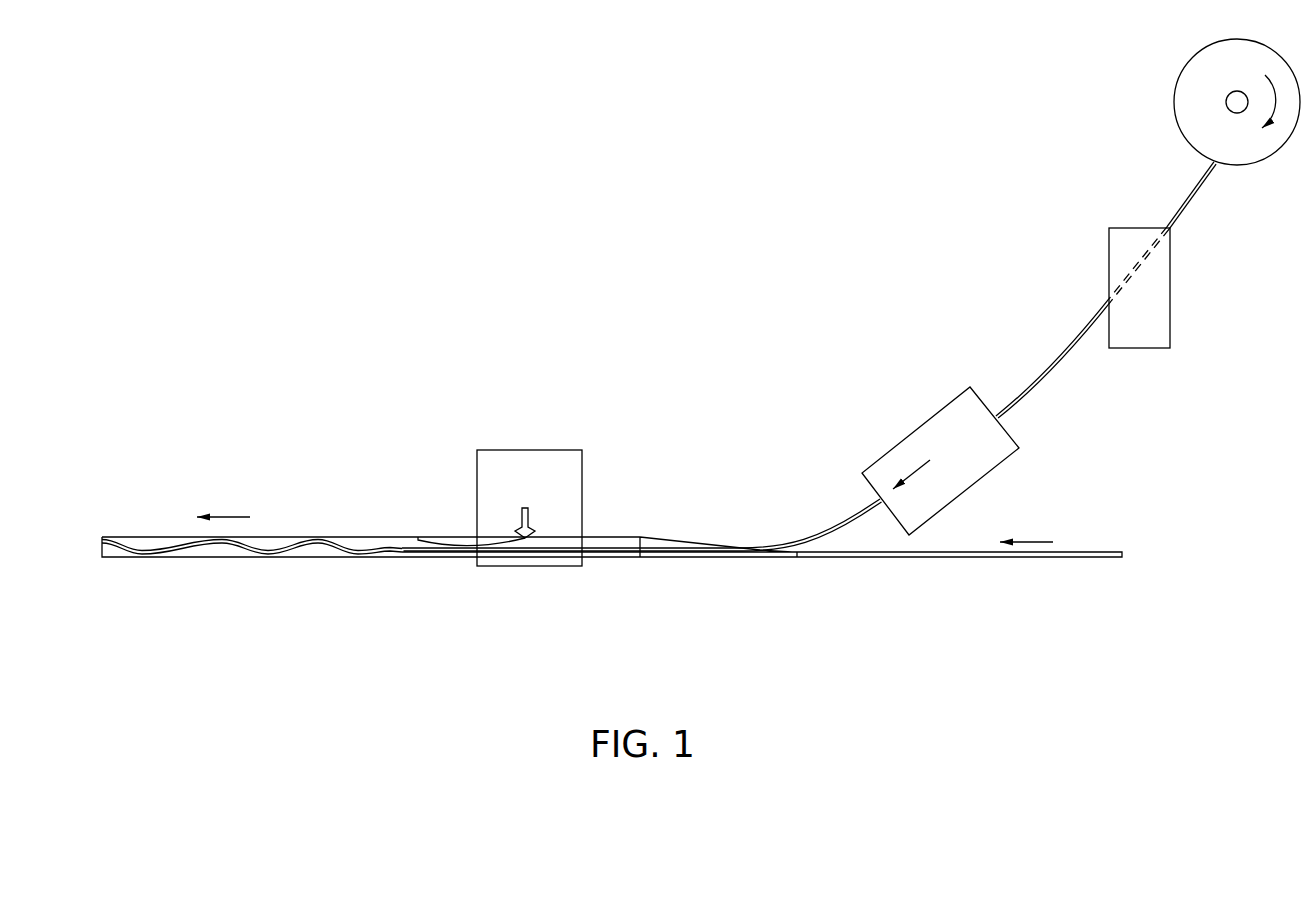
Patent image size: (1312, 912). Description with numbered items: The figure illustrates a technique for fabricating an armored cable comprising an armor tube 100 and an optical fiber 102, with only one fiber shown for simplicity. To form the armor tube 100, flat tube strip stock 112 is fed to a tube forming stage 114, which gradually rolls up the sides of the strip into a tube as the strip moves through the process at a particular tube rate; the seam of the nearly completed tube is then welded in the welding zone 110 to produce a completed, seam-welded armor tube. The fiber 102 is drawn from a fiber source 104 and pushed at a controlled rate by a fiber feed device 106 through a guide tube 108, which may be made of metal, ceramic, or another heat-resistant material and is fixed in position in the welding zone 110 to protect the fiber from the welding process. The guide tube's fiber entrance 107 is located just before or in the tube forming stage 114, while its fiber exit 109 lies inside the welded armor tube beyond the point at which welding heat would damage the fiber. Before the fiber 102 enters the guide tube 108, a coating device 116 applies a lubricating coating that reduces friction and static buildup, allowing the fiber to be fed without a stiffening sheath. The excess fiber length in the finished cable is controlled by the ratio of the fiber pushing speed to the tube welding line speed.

The armor tube 100 is at (228, 550).
The optical fiber 102 is at (1005, 416).
The fiber source 104 is at (1187, 66).
The fiber feed device 106 is at (924, 422).
The fiber entrance 107 is at (852, 509).
The guide tube 108 is at (800, 536).
The fiber exit 109 is at (394, 527).
The welding zone 110 is at (527, 449).
The flat tube strip stock 112 is at (1091, 539).
The tube forming stage 114 is at (684, 531).
The coating device 116 is at (1121, 227).